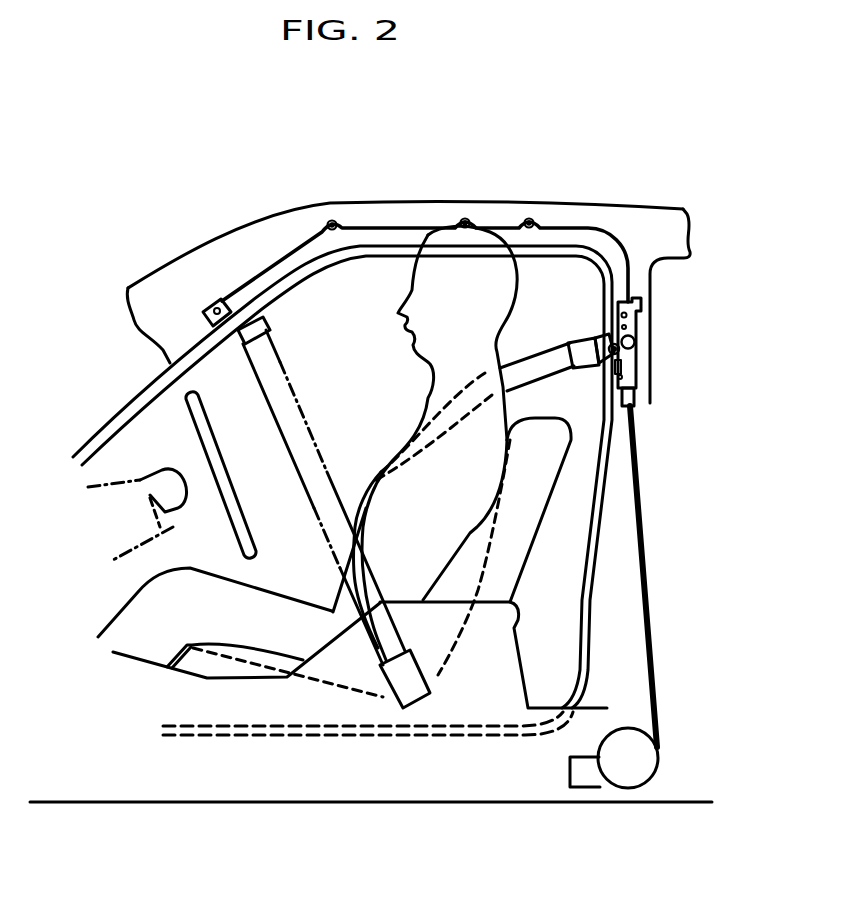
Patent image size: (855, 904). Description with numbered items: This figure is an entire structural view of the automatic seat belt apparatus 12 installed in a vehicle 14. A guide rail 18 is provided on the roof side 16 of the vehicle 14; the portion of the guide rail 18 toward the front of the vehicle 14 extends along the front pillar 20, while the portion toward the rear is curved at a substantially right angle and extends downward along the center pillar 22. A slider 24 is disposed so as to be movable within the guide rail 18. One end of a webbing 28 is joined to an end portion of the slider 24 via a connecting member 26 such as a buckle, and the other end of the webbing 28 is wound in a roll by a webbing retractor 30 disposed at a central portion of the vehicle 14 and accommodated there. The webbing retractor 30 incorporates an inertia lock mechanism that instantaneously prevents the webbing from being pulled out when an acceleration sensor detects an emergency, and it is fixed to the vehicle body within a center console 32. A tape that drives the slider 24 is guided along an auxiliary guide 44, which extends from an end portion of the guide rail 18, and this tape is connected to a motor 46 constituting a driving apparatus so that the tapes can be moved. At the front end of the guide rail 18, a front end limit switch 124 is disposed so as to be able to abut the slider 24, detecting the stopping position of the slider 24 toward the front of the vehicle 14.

The automatic seat belt apparatus 12 is at (421, 217).
The vehicle 14 is at (605, 186).
The roof side 16 is at (367, 215).
The guide rail 18 is at (448, 228).
The front pillar 20 is at (170, 283).
The center pillar 22 is at (641, 264).
The slider 24 is at (611, 342).
The connecting member 26 is at (581, 367).
The webbing 28 is at (544, 360).
The webbing retractor 30 is at (415, 675).
The center console 32 is at (520, 665).
The auxiliary guide 44 is at (647, 592).
The motor 46 is at (625, 790).
The front end limit switch 124 is at (214, 298).